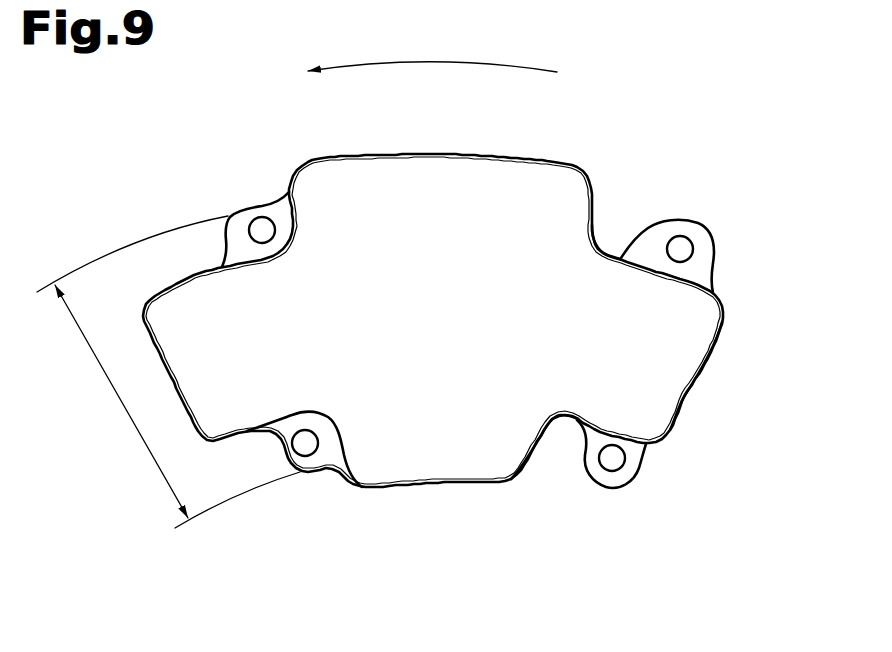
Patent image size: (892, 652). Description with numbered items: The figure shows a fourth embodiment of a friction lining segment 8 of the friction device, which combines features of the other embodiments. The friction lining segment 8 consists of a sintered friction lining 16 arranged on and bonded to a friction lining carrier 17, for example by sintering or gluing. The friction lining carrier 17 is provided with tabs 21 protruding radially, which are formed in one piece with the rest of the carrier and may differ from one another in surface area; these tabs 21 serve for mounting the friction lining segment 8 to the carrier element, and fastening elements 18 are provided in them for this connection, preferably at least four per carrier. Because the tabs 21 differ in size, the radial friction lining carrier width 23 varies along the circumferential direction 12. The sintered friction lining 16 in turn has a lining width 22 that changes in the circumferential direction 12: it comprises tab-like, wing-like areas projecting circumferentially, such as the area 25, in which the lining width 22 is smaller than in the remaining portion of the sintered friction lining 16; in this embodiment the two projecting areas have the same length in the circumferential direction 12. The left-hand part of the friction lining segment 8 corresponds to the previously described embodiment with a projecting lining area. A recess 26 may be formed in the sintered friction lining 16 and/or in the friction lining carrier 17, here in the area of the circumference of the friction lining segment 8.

The friction lining segment 8 is at (667, 125).
The circumferential direction 12 is at (433, 62).
The sintered friction lining 16 is at (509, 254).
The friction lining carrier 17 is at (623, 257).
The fastening element 18 is at (259, 219).
The tab 21 is at (718, 231).
The lining width 22 is at (116, 390).
The friction lining carrier width 23 is at (207, 373).
The area 25 is at (670, 387).
The recess 26 is at (563, 456).